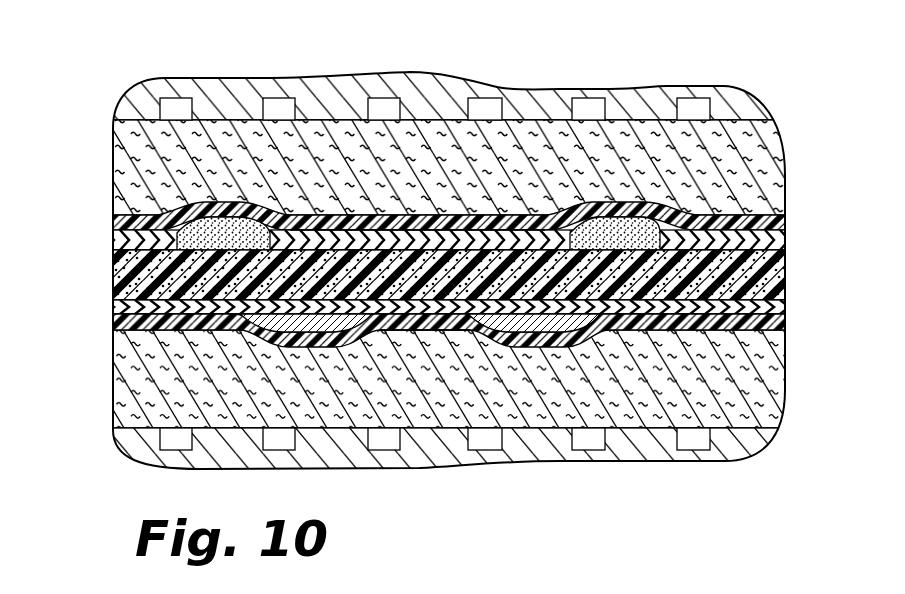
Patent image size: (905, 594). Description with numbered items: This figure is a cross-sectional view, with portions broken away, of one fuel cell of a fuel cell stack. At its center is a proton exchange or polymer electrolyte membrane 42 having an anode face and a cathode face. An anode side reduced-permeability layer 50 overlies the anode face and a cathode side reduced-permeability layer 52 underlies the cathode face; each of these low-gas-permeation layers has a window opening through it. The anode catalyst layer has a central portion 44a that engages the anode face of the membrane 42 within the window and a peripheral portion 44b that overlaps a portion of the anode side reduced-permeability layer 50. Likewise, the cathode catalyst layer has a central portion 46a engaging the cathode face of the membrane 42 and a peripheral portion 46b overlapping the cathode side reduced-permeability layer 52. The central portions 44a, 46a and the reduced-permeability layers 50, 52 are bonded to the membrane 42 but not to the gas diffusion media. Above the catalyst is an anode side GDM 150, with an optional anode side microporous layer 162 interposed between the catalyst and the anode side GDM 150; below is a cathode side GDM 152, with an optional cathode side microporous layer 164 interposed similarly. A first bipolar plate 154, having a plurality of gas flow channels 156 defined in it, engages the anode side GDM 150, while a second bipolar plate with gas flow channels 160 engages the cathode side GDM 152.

The first bipolar plate 154 is at (737, 97).
The anode side GDM 150 is at (755, 150).
The anode side microporous layer 162 is at (785, 224).
The anode side reduced-permeability layer 50 is at (122, 242).
The central portion of the anode catalyst layer 44a is at (410, 228).
The peripheral portion of the anode catalyst layer 44b is at (170, 208).
The membrane 42 is at (785, 262).
The cathode side reduced-permeability layer 52 is at (122, 306).
The cathode side microporous layer 164 is at (785, 318).
The cathode side GDM 152 is at (772, 390).
The central portion of the cathode catalyst layer 46a is at (463, 312).
The peripheral portion of the cathode catalyst layer 46b is at (243, 337).
The gas flow channels 156 is at (272, 98).
The gas flow channels 160 is at (470, 444).